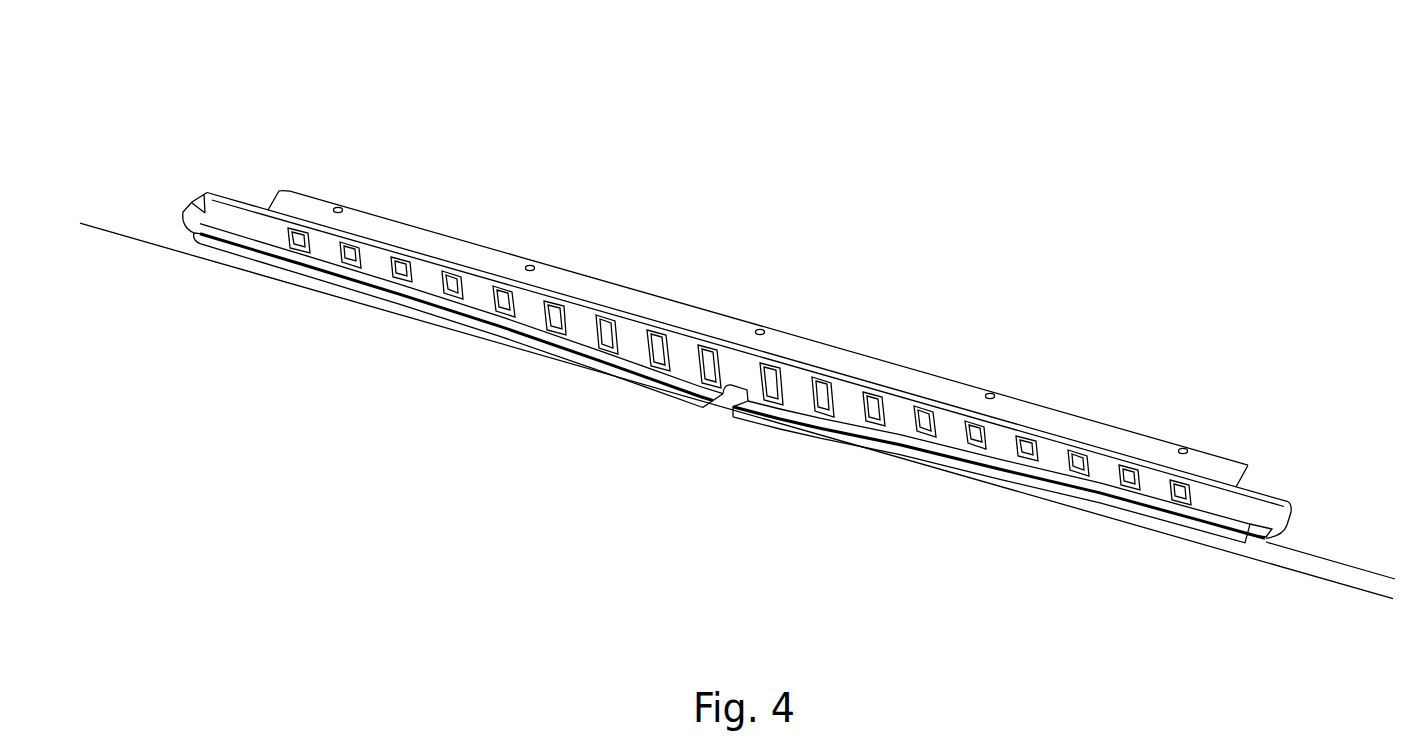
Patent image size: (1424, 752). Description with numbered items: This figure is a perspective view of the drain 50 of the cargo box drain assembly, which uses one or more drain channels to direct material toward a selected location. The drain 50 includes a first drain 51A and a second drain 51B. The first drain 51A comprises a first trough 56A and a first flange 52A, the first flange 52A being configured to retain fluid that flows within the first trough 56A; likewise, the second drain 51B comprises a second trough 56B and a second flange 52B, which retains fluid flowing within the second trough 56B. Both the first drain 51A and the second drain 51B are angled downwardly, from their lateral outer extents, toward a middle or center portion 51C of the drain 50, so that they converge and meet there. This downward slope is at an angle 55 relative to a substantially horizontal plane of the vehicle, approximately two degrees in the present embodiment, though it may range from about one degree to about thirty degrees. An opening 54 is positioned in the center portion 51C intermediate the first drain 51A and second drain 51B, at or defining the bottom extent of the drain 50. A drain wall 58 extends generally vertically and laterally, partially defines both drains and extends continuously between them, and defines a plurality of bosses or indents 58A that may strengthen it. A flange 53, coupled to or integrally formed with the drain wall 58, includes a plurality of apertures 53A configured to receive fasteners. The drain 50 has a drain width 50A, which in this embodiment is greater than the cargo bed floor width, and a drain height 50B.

The drain 50 is at (729, 368).
The drain width 50A is at (337, 57).
The drain height 50B is at (197, 189).
The first drain 51A is at (995, 506).
The second drain 51B is at (422, 309).
The center portion 51C is at (732, 408).
The first flange 52A is at (1012, 479).
The second flange 52B is at (456, 319).
The flange 53 is at (758, 339).
The apertures 53A is at (1183, 449).
The opening 54 is at (723, 394).
The angle 55 is at (1400, 515).
The first trough 56A is at (880, 434).
The second trough 56B is at (542, 334).
The drain wall 58 is at (739, 314).
The bosses or indents 58A is at (401, 259).